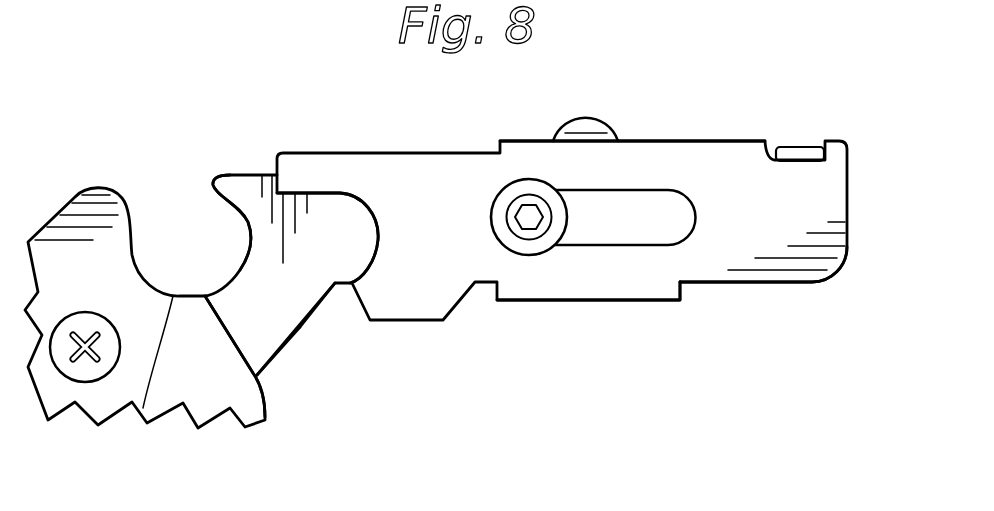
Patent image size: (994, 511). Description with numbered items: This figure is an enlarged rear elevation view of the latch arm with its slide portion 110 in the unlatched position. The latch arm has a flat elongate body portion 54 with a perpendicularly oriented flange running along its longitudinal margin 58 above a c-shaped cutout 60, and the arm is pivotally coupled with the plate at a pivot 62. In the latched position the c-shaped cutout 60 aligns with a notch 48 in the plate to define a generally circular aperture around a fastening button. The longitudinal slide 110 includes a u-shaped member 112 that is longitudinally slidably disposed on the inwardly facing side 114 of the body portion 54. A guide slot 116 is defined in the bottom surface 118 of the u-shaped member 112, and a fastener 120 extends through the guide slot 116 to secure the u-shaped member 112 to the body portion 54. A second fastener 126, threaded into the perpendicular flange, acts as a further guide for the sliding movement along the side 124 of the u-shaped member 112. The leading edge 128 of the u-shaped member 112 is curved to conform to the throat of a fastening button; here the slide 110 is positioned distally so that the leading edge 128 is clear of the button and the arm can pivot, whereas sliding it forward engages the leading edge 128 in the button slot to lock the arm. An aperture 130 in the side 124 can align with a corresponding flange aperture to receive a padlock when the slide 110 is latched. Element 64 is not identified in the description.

The notch 48 is at (143, 410).
The flat elongate body portion 54 is at (282, 332).
The longitudinal margin 58 is at (240, 175).
The c-shaped cutout 60 is at (238, 222).
The pivot 62 is at (80, 360).
The blade carrier 64 is at (618, 280).
The longitudinal slide 110 is at (770, 273).
The u-shaped member 112 is at (702, 268).
The inwardly facing side 114 is at (280, 310).
The guide slot 116 is at (577, 228).
The bottom surface 118 is at (803, 217).
The fastener 120 is at (517, 188).
The side 124 is at (640, 148).
The fastener 126 is at (582, 120).
The leading edge 128 is at (370, 222).
The aperture 130 is at (800, 150).